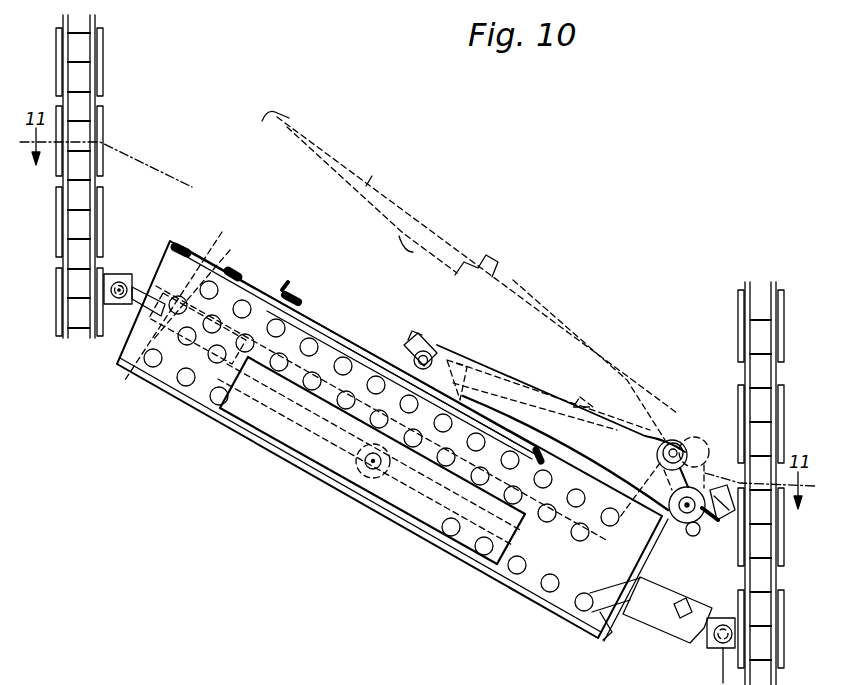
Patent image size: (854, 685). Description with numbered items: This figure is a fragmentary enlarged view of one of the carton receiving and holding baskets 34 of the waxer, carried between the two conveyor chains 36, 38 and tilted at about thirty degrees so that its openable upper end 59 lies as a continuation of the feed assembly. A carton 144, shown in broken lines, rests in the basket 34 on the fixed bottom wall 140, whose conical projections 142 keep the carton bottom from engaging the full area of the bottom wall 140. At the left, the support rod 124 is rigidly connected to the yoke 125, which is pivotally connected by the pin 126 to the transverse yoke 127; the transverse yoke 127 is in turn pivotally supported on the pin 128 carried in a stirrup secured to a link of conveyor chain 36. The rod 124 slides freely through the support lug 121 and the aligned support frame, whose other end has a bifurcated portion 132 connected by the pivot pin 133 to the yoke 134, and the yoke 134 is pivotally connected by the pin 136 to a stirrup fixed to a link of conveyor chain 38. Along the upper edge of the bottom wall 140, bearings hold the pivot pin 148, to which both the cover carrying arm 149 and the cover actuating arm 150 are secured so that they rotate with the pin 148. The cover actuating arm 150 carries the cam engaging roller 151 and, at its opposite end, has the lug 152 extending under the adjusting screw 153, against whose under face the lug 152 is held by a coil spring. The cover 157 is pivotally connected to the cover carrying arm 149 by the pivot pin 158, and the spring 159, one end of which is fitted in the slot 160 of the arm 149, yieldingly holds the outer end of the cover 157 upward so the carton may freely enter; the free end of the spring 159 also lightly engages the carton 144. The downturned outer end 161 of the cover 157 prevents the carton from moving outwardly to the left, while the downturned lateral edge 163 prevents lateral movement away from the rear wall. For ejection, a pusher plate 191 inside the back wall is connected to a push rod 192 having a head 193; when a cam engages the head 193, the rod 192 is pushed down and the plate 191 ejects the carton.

The conveyor chain 36 is at (105, 176).
The conveyor chain 38 is at (735, 483).
The openable upper end 59 is at (368, 439).
The basket 34 is at (381, 446).
The carton 144 is at (343, 495).
The yoke 125 is at (190, 367).
The support rod 124 is at (177, 346).
The head 193 is at (370, 455).
The pusher plate 191 is at (372, 460).
The push rod 192 is at (395, 472).
The pin 128 is at (125, 260).
The transverse yoke 127 is at (148, 276).
The pin 126 is at (359, 340).
The downturned outer end 161 is at (426, 257).
The support lug 121 is at (252, 261).
The cover 157 is at (301, 279).
The spring 159 is at (404, 371).
The downturned lateral edge 163 is at (436, 381).
The cover carrying arm 149 is at (562, 411).
The slot 160 is at (563, 438).
The pivot pin 158 is at (428, 337).
The cam engaging roller 151 is at (675, 428).
The cover actuating arm 150 is at (690, 446).
The pivot pin 148 is at (691, 528).
The lug 152 is at (712, 537).
The adjusting screw 153 is at (720, 487).
The conical projections 142 is at (600, 586).
The bottom wall 140 is at (594, 637).
The bifurcated portion 132 is at (625, 615).
The pivot pin 133 is at (681, 606).
The yoke 134 is at (697, 638).
The pin 136 is at (764, 628).